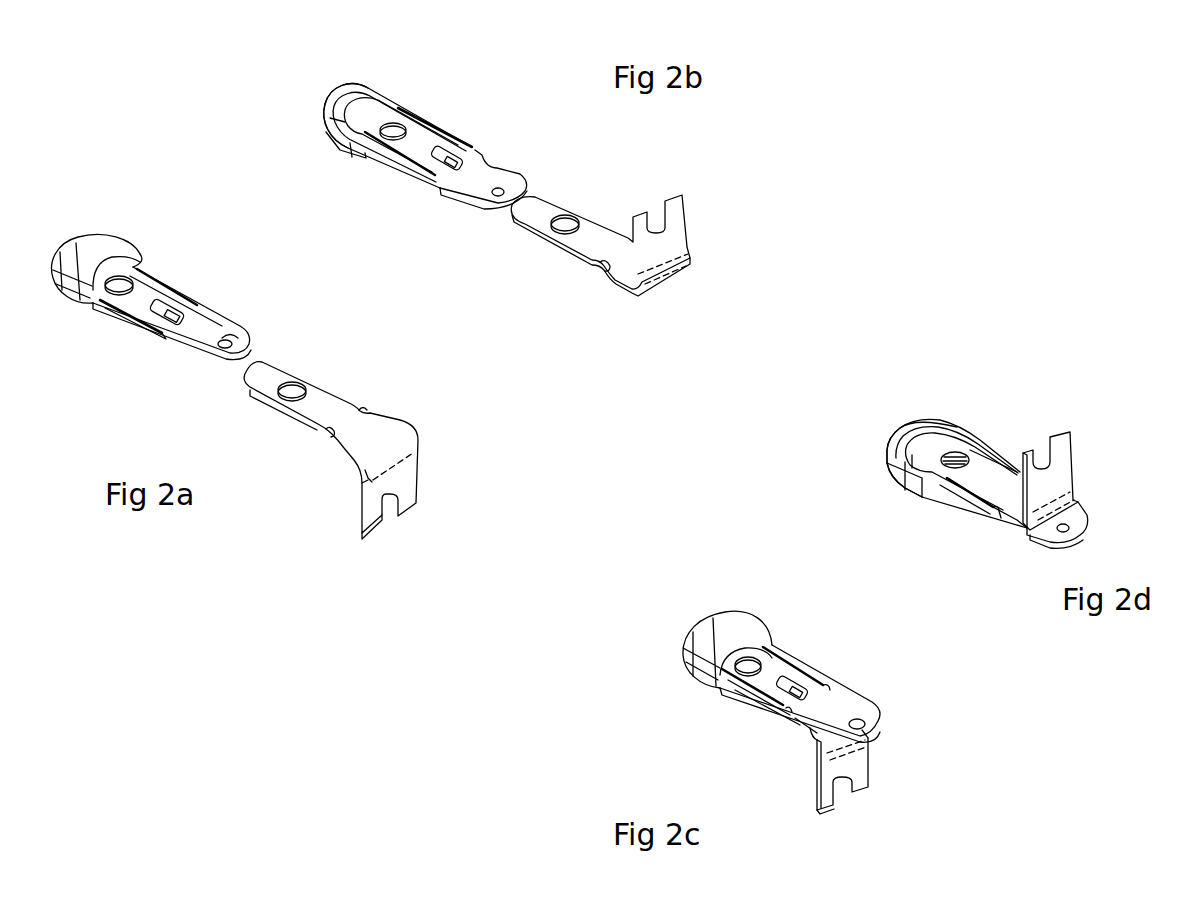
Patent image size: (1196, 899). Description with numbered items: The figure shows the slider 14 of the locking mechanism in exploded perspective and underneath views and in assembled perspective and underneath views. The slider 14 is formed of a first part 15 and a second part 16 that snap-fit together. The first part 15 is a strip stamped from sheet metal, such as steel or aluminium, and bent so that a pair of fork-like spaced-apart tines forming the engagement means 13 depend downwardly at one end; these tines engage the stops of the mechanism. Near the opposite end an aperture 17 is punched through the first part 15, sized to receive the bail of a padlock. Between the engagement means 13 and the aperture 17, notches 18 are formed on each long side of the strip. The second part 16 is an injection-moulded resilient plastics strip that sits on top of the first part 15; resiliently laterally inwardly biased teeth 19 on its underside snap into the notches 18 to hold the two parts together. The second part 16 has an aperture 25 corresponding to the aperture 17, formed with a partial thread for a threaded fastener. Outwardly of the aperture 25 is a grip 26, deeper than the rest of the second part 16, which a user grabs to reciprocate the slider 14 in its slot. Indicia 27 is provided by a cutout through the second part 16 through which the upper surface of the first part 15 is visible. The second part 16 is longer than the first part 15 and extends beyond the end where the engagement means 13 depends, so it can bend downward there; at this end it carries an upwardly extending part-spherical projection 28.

In FIG. 2A, the engagement means 13 is at (368, 521).
In FIG. 2B, the engagement means 13 is at (686, 209).
In FIG. 2C, the engagement means 13 is at (826, 806).
In FIG. 2D, the engagement means 13 is at (1068, 445).
In FIG. 2A, the slider 14 is at (110, 386).
In FIG. 2B, the slider 14 is at (482, 94).
In FIG. 2C, the slider 14 is at (704, 742).
In FIG. 2D, the slider 14 is at (1022, 396).
In FIG. 2A, the first part 15 is at (348, 462).
In FIG. 2B, the first part 15 is at (625, 223).
In FIG. 2C, the first part 15 is at (866, 796).
In FIG. 2D, the first part 15 is at (1080, 456).
In FIG. 2A, the second part 16 is at (161, 291).
In FIG. 2B, the second part 16 is at (446, 123).
In FIG. 2C, the second part 16 is at (791, 673).
In FIG. 2D, the second part 16 is at (970, 473).
In FIG. 2A, the aperture 17 is at (280, 397).
In FIG. 2B, the aperture 17 is at (569, 214).
In FIG. 2C, the aperture 17 is at (772, 650).
In FIG. 2D, the aperture 17 is at (958, 432).
In FIG. 2A, the notches 18 is at (328, 438).
In FIG. 2B, the notches 18 is at (602, 270).
In FIG. 2C, the notches 18 is at (834, 686).
In FIG. 2D, the notches 18 is at (998, 524).
In FIG. 2A, the teeth 19 is at (199, 306).
In FIG. 2B, the teeth 19 is at (475, 149).
In FIG. 2C, the teeth 19 is at (826, 686).
In FIG. 2D, the teeth 19 is at (985, 508).
In FIG. 2A, the aperture 25 is at (119, 276).
In FIG. 2B, the aperture 25 is at (412, 112).
In FIG. 2A, the grip 26 is at (76, 236).
In FIG. 2B, the grip 26 is at (344, 86).
In FIG. 2C, the grip 26 is at (688, 640).
In FIG. 2D, the grip 26 is at (887, 440).
In FIG. 2A, the indicia 27 is at (172, 302).
In FIG. 2B, the indicia 27 is at (428, 150).
In FIG. 2C, the indicia 27 is at (778, 684).
In FIG. 2A, the projection 28 is at (222, 352).
In FIG. 2B, the projection 28 is at (498, 192).
In FIG. 2C, the projection 28 is at (875, 724).
In FIG. 2D, the projection 28 is at (1063, 528).